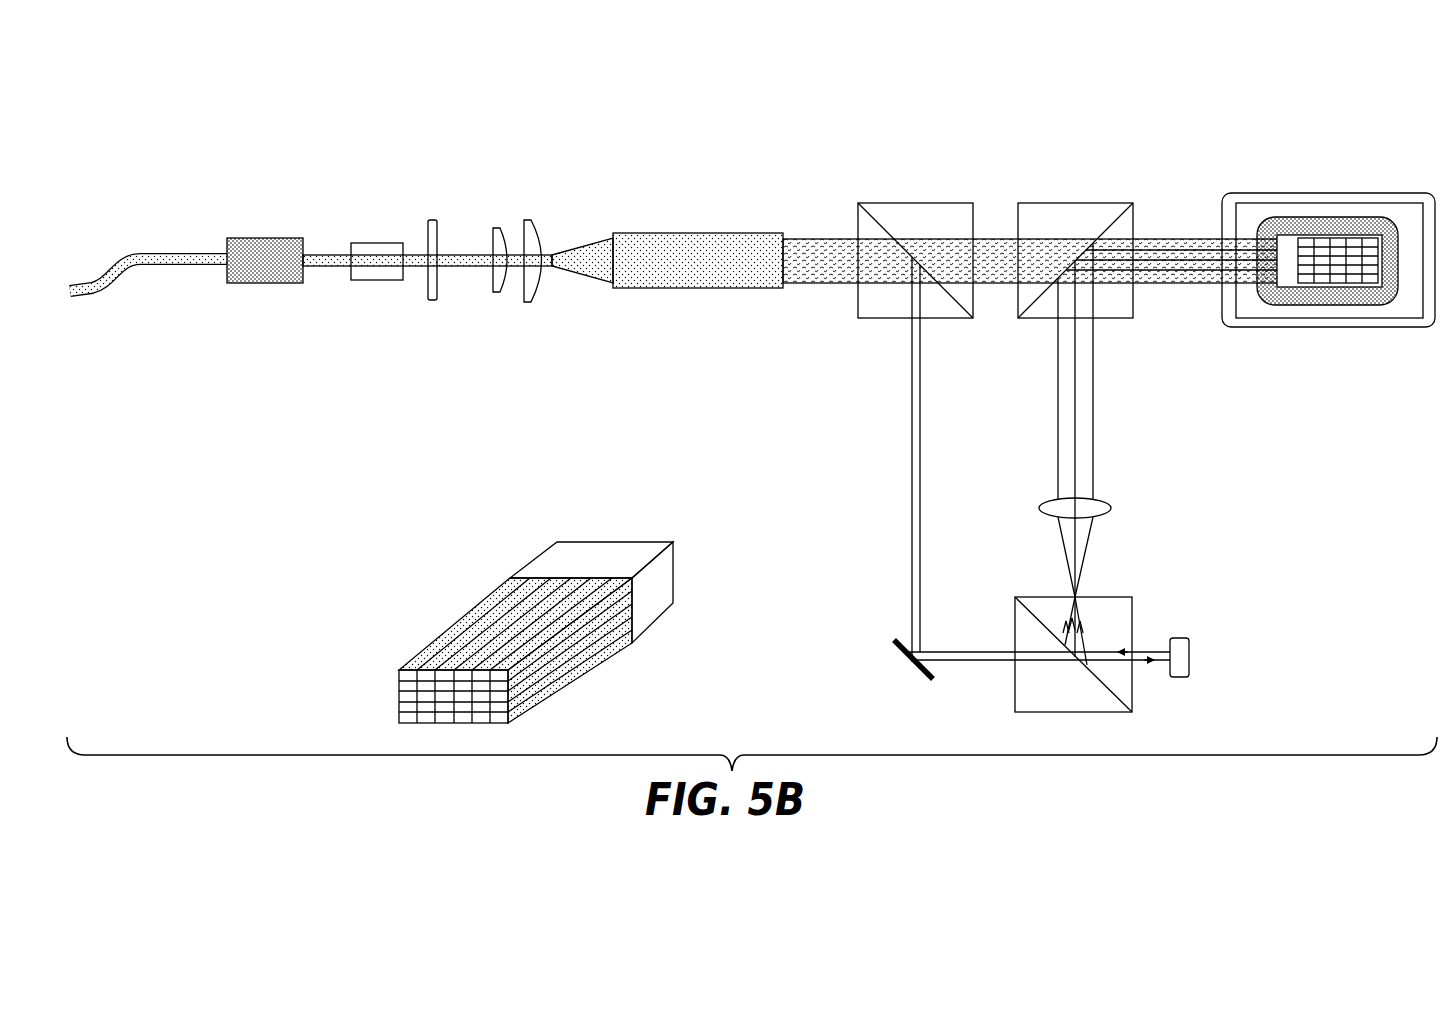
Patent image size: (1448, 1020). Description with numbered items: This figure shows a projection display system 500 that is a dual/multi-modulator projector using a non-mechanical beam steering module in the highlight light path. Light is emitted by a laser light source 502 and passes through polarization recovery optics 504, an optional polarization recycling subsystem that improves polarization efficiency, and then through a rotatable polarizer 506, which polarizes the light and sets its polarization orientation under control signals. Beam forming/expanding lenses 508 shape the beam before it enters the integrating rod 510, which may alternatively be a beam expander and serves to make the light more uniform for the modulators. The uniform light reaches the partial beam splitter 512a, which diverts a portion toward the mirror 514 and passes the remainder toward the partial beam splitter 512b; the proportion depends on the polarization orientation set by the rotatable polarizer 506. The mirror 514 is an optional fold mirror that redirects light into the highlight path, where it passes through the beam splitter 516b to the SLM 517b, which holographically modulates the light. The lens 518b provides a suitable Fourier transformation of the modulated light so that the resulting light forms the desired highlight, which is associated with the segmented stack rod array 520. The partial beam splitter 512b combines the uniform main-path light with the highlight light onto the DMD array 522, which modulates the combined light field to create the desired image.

The projection display system 500 is at (163, 146).
The laser light source 502 is at (280, 238).
The polarization recovery optics 504 is at (376, 243).
The rotatable polarizer 506 is at (431, 221).
The beam forming/expanding lenses 508 is at (536, 221).
The integrating rod 510 is at (703, 234).
The partial beam splitter 512a is at (913, 203).
The partial beam splitter 512b is at (1094, 203).
The mirror 514 is at (900, 641).
The beam splitter 516b is at (1113, 712).
The SLM 517b is at (1180, 639).
The lens 518b is at (1105, 503).
The stack rod array 520 is at (600, 539).
The DMD array 522 is at (1345, 192).